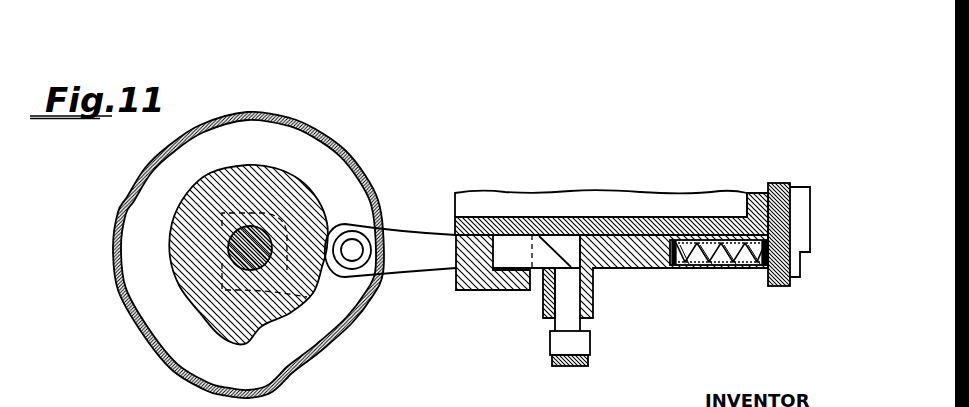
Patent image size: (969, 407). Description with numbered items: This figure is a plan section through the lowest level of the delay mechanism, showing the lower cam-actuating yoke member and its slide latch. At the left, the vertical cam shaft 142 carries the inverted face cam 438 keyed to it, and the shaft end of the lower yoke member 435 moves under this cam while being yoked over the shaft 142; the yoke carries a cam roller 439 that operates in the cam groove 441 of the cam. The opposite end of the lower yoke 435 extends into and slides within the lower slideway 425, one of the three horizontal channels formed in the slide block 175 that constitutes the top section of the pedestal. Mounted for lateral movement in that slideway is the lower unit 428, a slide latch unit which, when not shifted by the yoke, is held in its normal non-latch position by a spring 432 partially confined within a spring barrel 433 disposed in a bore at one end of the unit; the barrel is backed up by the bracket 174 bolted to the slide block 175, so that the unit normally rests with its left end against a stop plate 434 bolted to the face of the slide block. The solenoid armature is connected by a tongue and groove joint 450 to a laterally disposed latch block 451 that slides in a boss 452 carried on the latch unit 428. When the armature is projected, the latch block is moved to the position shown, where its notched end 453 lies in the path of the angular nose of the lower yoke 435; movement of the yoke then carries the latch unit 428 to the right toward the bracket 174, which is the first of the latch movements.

The cam shaft 142 is at (236, 257).
The bracket 174 is at (773, 192).
The slide block 175 is at (485, 220).
The lower slideway 425 is at (605, 230).
The lower unit 428 is at (605, 268).
The spring 432 is at (678, 268).
The spring barrel 433 is at (762, 268).
The stop plate 434 is at (468, 292).
The lower yoke member 435 is at (408, 238).
The inverted face cam 438 is at (330, 137).
The cam roller 439 is at (352, 231).
The cam groove 441 is at (294, 129).
The tongue and groove joint 450 is at (588, 357).
The latch block 451 is at (573, 347).
The boss 452 is at (545, 312).
The notched end 453 is at (576, 268).